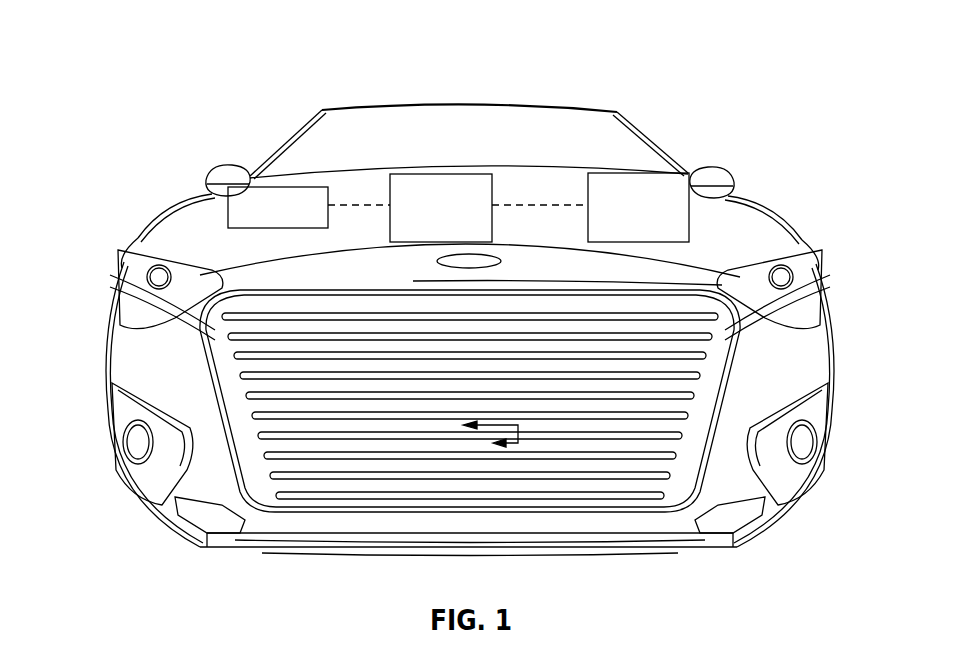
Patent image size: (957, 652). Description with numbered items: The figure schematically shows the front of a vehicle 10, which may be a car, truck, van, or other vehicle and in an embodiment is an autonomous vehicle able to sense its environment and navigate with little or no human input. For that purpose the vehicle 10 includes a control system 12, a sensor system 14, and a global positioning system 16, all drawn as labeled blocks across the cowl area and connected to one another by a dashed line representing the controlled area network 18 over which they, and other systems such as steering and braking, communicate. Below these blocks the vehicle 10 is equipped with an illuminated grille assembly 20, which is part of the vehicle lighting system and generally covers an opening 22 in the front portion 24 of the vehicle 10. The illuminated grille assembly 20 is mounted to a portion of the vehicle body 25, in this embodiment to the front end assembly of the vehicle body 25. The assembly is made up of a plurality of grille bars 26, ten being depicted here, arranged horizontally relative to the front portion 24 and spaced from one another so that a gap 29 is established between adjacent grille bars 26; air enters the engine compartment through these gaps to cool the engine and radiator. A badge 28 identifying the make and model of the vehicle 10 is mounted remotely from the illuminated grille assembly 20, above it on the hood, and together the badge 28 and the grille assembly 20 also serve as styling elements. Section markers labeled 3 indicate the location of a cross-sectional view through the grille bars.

The vehicle 10 is at (722, 63).
The control system 12 is at (440, 174).
The sensor system 14 is at (638, 172).
The global positioning system (GPS) 16 is at (262, 186).
The controlled area network (CAN) 18 is at (540, 205).
The illuminated grille assembly 20 is at (536, 310).
The opening 22 is at (213, 362).
The front portion 24 is at (118, 463).
The vehicle body 25 is at (830, 343).
The grille bars 26 is at (118, 278).
The badge 28 is at (438, 260).
The gap 29 is at (825, 282).
The section line 3- 3 is at (482, 436).